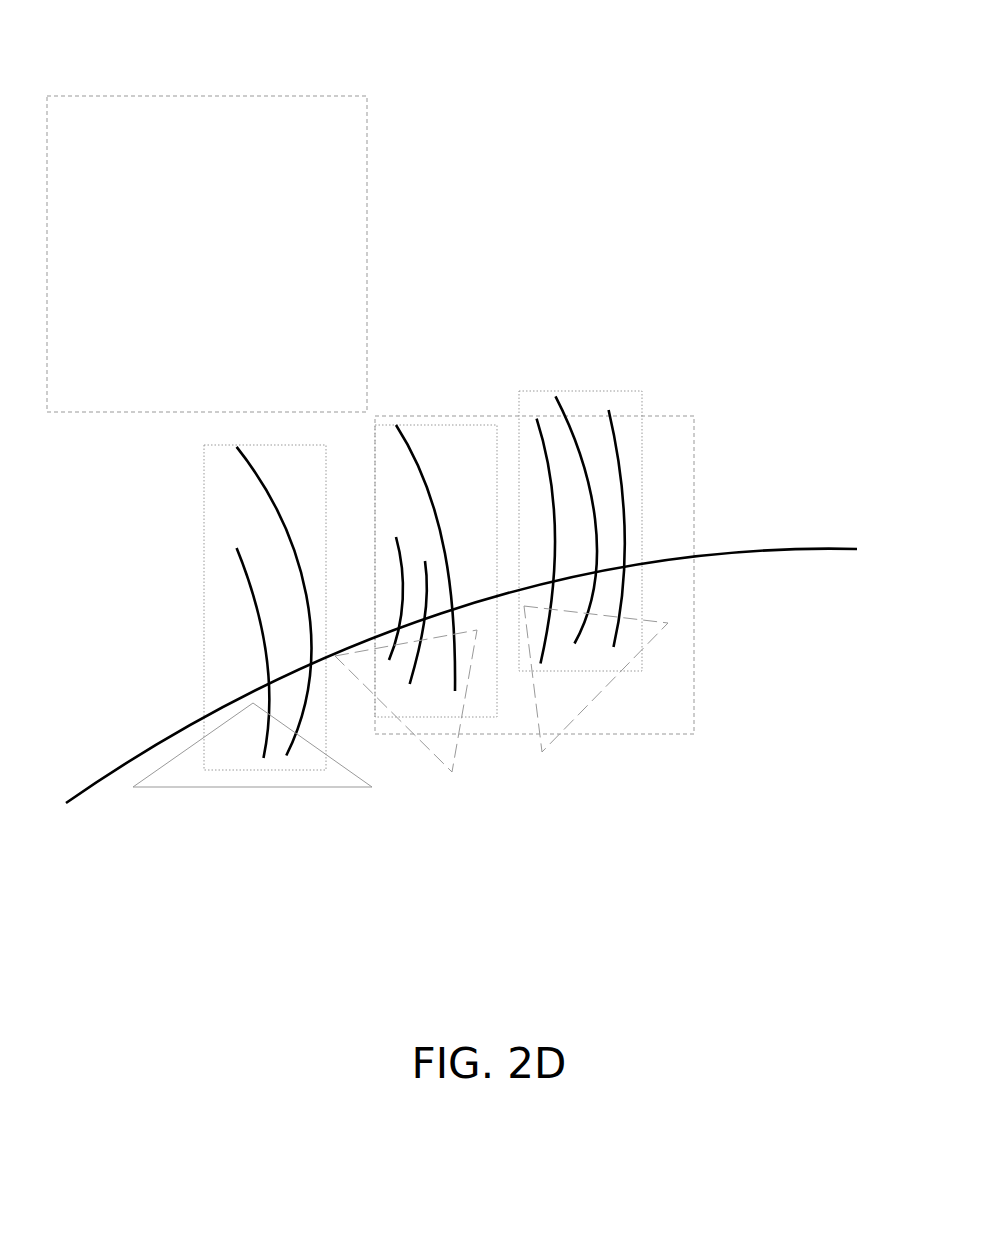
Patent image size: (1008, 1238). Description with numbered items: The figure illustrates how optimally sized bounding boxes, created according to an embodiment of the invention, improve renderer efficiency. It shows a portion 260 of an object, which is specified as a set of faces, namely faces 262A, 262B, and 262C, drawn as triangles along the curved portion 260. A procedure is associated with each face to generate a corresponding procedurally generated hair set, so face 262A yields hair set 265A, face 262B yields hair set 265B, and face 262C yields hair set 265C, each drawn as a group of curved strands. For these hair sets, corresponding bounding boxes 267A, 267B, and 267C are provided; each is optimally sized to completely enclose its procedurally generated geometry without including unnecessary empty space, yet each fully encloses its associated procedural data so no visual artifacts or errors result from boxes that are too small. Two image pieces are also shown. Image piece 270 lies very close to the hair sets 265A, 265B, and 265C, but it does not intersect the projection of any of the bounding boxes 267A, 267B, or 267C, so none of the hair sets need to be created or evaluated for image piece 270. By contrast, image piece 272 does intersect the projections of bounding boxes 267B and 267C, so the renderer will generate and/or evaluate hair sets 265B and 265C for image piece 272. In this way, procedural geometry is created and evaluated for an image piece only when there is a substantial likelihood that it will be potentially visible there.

The portion of object 260 is at (461, 676).
The face 262A is at (308, 790).
The face 262B is at (442, 765).
The face 262C is at (553, 740).
The hair set 265A is at (249, 467).
The hair set 265B is at (423, 375).
The hair set 265C is at (583, 424).
The bounding box 267A is at (199, 464).
The bounding box 267B is at (389, 412).
The bounding box 267C is at (647, 404).
The image piece 270 is at (287, 89).
The image piece 272 is at (693, 698).